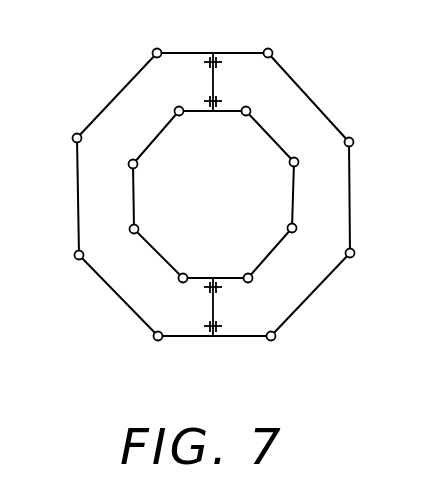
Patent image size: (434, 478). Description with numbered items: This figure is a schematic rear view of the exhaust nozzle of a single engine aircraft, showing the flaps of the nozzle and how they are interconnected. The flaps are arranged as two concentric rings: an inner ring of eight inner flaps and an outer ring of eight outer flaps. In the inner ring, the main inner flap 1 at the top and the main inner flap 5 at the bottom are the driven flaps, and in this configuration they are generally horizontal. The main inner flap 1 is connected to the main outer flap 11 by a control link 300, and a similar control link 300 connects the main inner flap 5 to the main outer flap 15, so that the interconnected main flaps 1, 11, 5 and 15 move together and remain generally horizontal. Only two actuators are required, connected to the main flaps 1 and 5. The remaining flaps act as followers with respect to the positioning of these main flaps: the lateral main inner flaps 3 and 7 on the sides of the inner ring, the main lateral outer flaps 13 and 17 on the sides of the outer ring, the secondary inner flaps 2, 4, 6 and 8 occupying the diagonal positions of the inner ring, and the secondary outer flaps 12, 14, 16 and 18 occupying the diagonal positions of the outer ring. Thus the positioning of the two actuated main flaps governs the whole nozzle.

The main inner flap 1 is at (193, 105).
The secondary inner flap 2 is at (158, 135).
The lateral main inner flap 3 is at (133, 200).
The secondary inner flap 4 is at (158, 255).
The main inner flap 5 is at (193, 283).
The secondary inner flap 6 is at (271, 248).
The lateral main inner flap 7 is at (293, 206).
The secondary inner flap 8 is at (266, 133).
The main outer flap 11 is at (238, 53).
The secondary outer flap 12 is at (112, 97).
The main lateral outer flap 13 is at (77, 200).
The secondary outer flap 14 is at (122, 301).
The main outer flap 15 is at (242, 337).
The secondary outer flap 16 is at (310, 295).
The main lateral outer flap 17 is at (350, 210).
The secondary outer flap 18 is at (315, 96).
The control link 300 is at (214, 82).